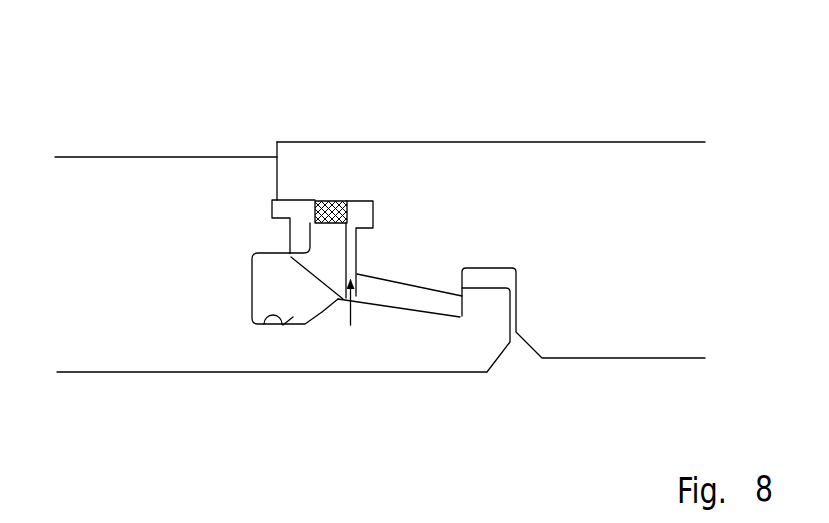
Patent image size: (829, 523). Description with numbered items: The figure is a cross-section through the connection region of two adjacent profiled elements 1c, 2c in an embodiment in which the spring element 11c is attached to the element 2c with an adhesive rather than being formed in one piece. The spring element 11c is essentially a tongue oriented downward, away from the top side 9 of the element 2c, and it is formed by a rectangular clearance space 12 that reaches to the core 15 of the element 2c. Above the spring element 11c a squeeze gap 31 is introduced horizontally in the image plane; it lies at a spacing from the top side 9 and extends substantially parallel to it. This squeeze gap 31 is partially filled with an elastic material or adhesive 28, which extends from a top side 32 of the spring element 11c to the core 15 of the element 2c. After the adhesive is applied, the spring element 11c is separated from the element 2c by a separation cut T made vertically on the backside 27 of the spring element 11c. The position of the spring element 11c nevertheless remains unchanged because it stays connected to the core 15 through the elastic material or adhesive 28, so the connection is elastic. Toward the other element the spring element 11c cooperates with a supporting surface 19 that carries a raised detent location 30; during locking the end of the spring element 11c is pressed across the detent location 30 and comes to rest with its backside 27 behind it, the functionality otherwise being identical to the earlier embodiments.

The element 1c is at (150, 177).
The element 2c is at (642, 155).
The top side 9 is at (483, 142).
The spring element 11c is at (326, 257).
The clearance space 12 is at (351, 238).
The core 15 is at (642, 230).
The supporting surface 19 is at (260, 325).
The backside 27 is at (352, 240).
The elastic material or adhesive 28 is at (314, 203).
The detent location 30 is at (332, 310).
The squeeze gap 31 is at (355, 212).
The top side 32 is at (313, 221).
The separation cut T is at (352, 313).